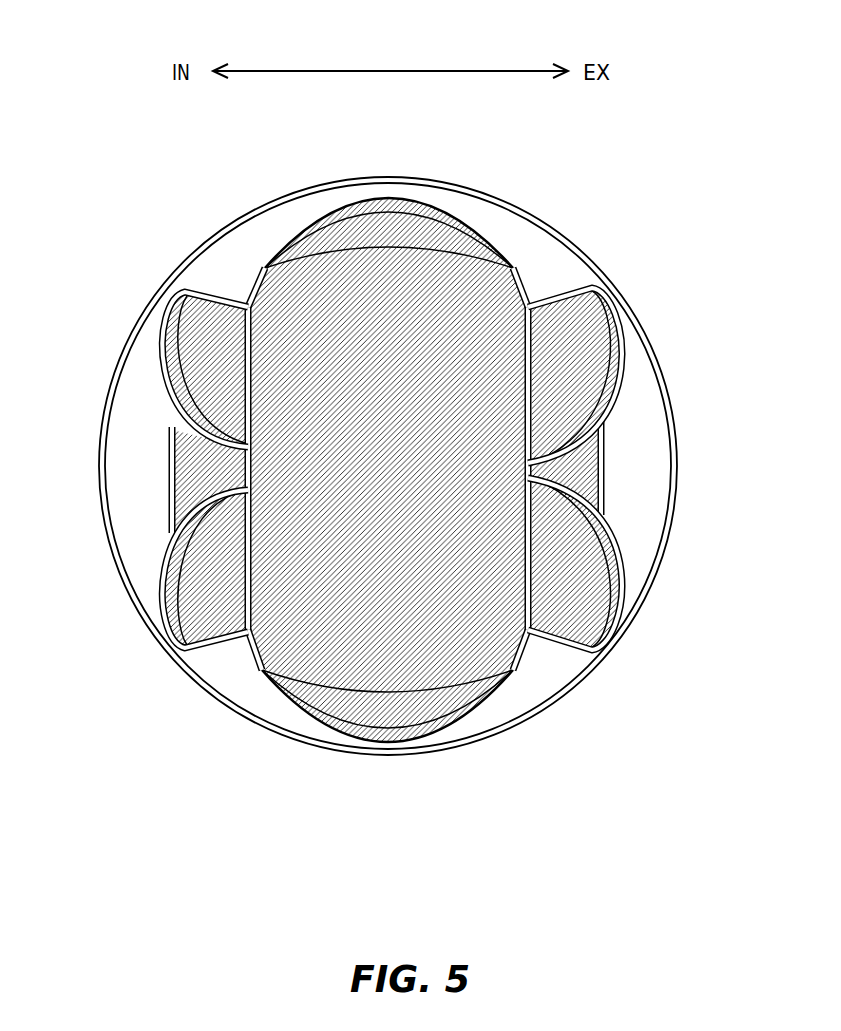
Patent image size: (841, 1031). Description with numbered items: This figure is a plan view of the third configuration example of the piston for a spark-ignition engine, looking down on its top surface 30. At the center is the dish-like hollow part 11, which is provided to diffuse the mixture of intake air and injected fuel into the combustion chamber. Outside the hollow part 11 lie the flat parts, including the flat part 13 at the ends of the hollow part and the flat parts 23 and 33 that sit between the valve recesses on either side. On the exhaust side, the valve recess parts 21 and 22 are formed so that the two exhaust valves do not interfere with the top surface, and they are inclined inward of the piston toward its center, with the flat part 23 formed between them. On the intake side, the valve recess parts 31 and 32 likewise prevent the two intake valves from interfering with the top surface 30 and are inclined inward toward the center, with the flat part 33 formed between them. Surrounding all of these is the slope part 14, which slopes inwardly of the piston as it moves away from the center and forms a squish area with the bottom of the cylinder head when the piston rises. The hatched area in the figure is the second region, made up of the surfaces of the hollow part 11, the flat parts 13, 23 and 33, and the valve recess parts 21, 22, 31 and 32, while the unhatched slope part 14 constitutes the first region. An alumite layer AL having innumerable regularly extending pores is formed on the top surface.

The hollow part 11 is at (490, 632).
The flat part 13 is at (333, 236).
The slope part 14 is at (632, 517).
The valve recess part 21 is at (565, 603).
The valve recess part 22 is at (580, 327).
The flat part 23 is at (580, 465).
The top surface 30 is at (548, 224).
The valve recess part 31 is at (200, 578).
The valve recess part 32 is at (207, 335).
The flat part 33 is at (200, 477).
The alumite layer AL is at (120, 436).